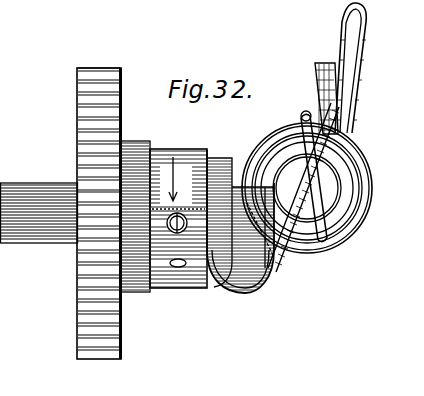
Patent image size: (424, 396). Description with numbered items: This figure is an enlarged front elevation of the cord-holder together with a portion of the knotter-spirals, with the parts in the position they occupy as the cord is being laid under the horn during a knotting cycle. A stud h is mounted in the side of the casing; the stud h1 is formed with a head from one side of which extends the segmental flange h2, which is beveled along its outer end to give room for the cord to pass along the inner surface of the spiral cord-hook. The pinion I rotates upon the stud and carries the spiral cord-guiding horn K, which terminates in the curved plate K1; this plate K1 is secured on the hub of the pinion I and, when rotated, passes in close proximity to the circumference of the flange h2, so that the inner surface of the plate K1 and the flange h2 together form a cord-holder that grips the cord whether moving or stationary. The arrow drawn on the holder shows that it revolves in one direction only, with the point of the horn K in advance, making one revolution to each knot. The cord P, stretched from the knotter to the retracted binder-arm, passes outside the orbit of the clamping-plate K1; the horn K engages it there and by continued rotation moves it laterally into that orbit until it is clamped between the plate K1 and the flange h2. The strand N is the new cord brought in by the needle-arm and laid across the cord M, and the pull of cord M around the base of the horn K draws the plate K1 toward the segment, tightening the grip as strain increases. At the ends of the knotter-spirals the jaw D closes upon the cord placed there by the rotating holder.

The stud h1 is at (39, 198).
The pinion I is at (99, 228).
The spiral cord-guiding horn K is at (205, 216).
The curved plate K1 is at (233, 293).
The cord-hook jaw D is at (372, 222).
The segmental flange h2 is at (271, 272).
The cord P is at (318, 176).
The stud h is at (320, 109).
The new cord N is at (344, 28).
The cord M is at (360, 72).